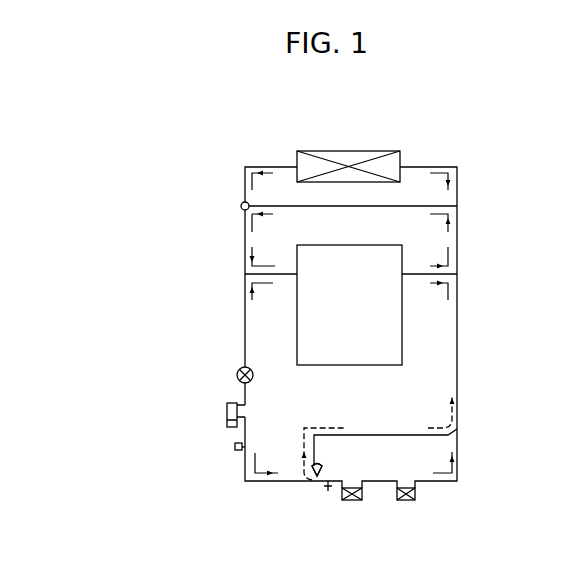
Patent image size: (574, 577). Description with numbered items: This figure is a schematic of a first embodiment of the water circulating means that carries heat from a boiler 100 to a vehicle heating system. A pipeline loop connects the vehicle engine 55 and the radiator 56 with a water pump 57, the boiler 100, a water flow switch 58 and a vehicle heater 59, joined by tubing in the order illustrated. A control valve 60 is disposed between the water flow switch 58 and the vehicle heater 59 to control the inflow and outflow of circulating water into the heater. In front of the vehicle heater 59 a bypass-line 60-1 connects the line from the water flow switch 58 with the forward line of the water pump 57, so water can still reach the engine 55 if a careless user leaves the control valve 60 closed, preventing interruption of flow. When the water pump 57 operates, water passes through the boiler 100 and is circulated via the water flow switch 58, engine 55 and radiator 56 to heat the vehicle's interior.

The radiator 56 is at (382, 150).
The vehicle engine 55 is at (297, 302).
The water pump 57 is at (237, 374).
The boiler 100 is at (227, 412).
The water flow switch 58 is at (235, 448).
The bypass-line 60-1 is at (312, 480).
The control valve 60 is at (328, 491).
The vehicle heater 59 is at (352, 500).